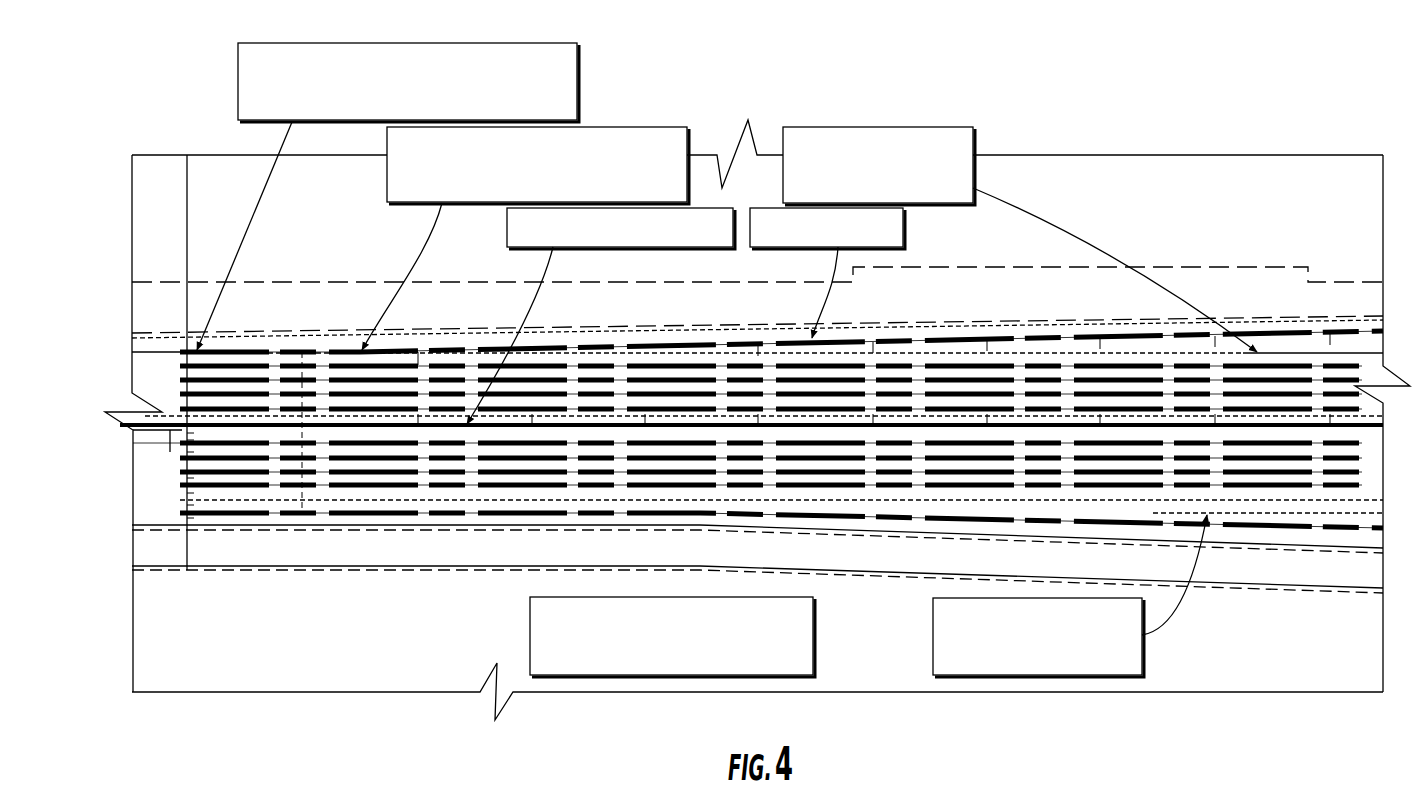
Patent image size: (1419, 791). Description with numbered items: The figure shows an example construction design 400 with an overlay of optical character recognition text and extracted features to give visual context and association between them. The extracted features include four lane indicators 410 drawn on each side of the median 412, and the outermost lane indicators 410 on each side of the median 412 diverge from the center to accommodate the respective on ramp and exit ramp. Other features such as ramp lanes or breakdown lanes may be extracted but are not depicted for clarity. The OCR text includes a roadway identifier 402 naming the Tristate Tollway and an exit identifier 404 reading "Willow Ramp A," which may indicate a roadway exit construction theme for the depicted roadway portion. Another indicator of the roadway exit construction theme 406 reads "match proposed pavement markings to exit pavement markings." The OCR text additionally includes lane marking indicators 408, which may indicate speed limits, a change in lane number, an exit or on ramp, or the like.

The construction design 400 is at (490, 712).
The roadway identifier 402 is at (680, 247).
The exit identifier 404 is at (805, 247).
The indicator of the roadway exit construction theme 406 is at (238, 90).
The lane marking indicator 408 is at (387, 187).
The lane indicator 410 is at (343, 516).
The median 412 is at (170, 432).